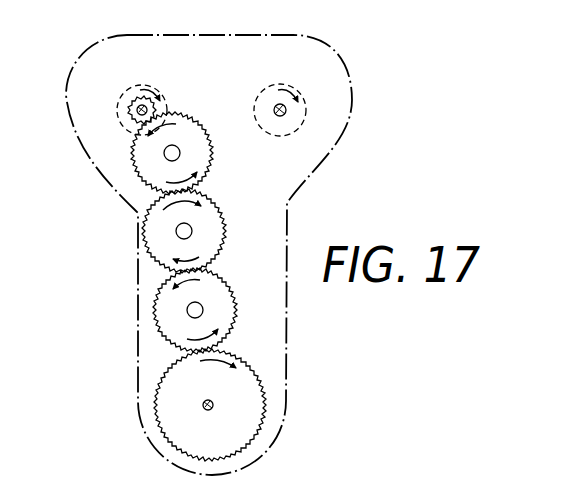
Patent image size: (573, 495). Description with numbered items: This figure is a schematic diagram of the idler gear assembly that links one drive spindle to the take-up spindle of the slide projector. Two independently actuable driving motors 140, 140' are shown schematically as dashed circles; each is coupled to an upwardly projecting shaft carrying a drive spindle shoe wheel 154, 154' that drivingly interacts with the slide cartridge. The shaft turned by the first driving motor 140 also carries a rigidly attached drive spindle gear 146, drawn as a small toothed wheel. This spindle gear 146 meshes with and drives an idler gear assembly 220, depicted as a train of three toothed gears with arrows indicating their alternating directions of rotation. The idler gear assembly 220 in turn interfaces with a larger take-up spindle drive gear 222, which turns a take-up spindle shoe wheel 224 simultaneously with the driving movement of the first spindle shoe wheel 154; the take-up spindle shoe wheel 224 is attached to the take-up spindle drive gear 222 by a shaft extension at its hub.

The driving motor 140 is at (121, 106).
The driving motor 140' is at (294, 120).
The drive spindle gear 146 is at (157, 108).
The drive spindle shoe wheel 154 is at (142, 89).
The drive spindle shoe wheel 154' is at (290, 85).
The idler gear assembly 220 is at (226, 208).
The take-up spindle drive gear 222 is at (243, 433).
The take-up spindle shoe wheel 224 is at (222, 394).